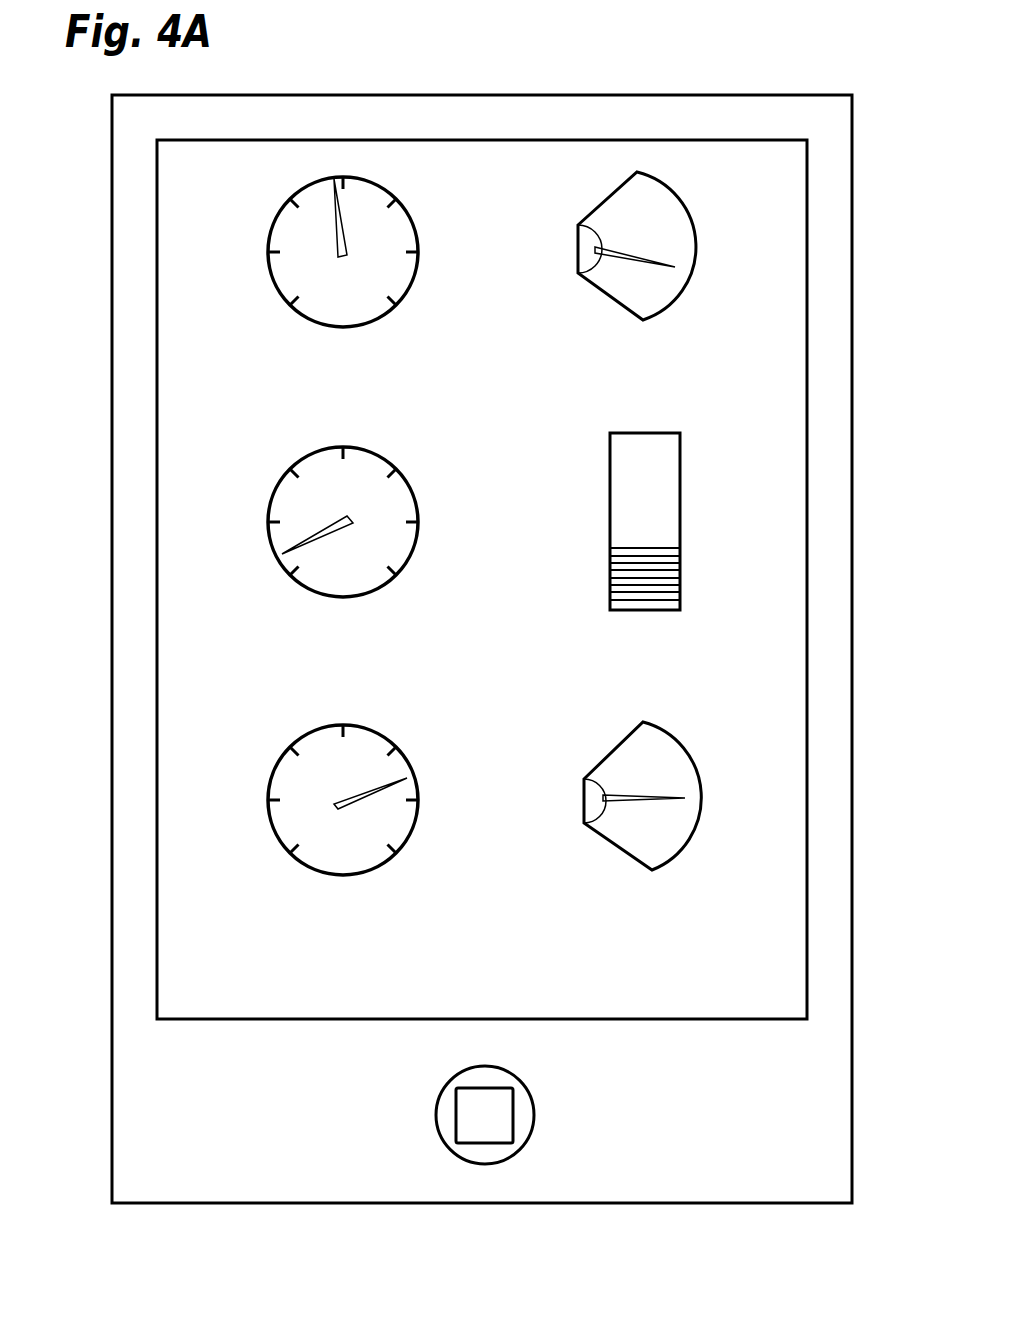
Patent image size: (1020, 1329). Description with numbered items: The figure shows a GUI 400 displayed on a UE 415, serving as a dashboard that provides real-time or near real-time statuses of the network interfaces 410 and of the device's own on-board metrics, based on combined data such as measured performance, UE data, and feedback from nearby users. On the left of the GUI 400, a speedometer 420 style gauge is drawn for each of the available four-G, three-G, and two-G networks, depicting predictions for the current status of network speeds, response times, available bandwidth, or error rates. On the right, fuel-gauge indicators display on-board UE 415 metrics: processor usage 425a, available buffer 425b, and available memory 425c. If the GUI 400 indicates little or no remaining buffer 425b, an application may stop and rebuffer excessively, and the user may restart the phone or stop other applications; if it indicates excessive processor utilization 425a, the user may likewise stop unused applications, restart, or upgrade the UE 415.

The GUI 400 is at (86, 220).
The network interfaces 410 is at (492, 490).
The UE 415 is at (852, 405).
The speedometer 420 is at (417, 232).
The processor usage 425a is at (698, 766).
The available buffer 425b is at (681, 507).
The available memory 425c is at (697, 249).